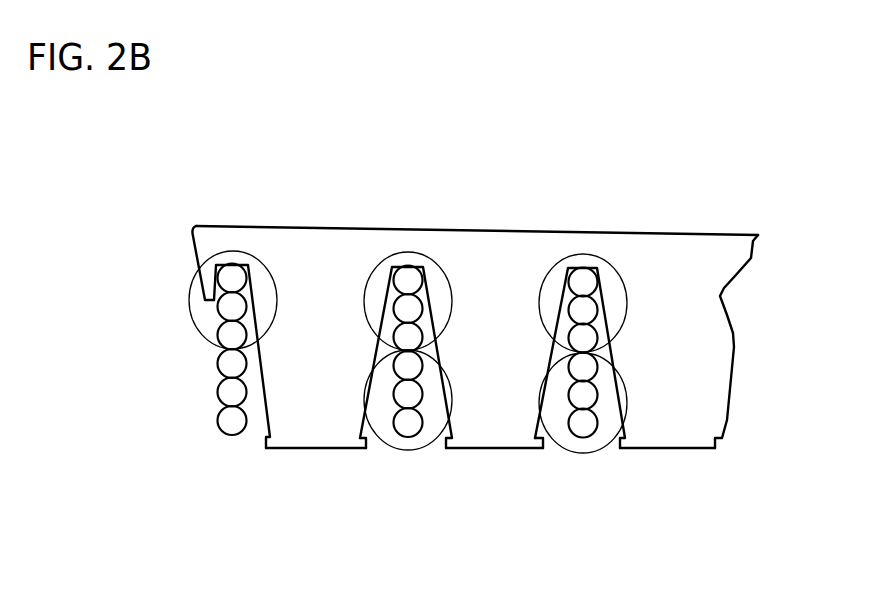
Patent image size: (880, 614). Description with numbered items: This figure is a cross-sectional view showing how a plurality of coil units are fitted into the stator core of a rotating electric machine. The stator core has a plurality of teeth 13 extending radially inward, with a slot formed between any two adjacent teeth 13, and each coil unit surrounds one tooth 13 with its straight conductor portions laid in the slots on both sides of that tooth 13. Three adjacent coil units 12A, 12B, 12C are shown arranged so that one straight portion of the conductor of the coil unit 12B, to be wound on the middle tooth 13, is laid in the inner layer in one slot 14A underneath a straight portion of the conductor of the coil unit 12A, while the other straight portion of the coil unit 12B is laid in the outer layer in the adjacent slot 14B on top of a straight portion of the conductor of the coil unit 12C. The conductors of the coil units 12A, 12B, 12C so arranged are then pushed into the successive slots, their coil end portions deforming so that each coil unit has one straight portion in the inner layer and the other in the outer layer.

The coil unit 12A is at (243, 252).
The coil unit 12B is at (408, 250).
The coil unit 12C is at (585, 250).
The tooth 13 is at (322, 408).
The slot 14A is at (382, 400).
The slot 14B is at (557, 417).